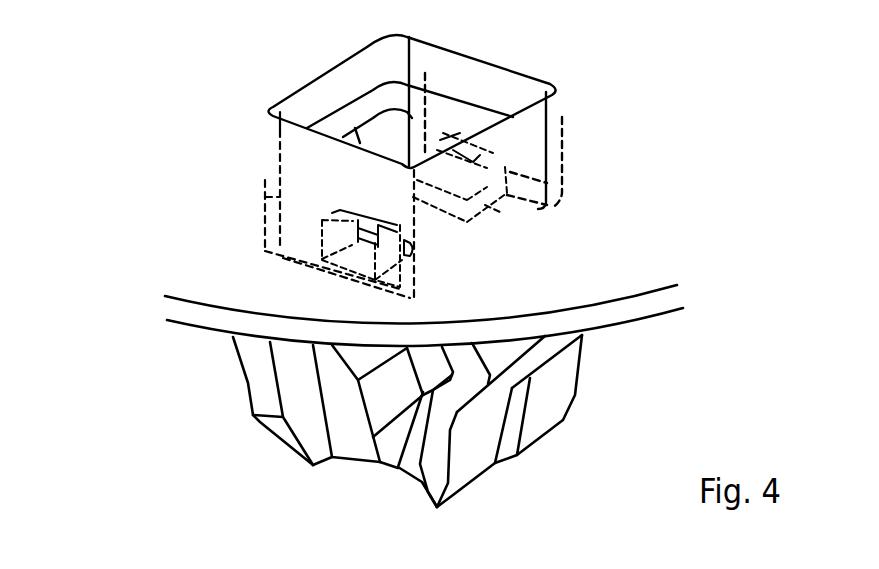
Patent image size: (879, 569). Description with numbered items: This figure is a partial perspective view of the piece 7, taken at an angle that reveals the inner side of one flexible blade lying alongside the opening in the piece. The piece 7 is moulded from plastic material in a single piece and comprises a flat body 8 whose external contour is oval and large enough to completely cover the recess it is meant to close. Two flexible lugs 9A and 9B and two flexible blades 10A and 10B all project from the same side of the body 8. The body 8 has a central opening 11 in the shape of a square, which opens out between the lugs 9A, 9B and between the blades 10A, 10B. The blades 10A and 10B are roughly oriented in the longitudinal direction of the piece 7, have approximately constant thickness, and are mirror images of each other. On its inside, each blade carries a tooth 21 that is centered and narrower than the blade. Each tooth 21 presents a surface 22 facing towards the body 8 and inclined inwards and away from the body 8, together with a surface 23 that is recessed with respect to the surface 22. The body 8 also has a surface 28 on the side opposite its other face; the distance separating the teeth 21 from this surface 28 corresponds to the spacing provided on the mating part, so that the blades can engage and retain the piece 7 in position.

The piece 7 is at (190, 62).
The body 8 is at (207, 285).
The flexible lug 9A is at (263, 373).
The flexible lug 9B is at (442, 445).
The flexible blade 10A is at (412, 285).
The flexible blade 10B is at (557, 159).
The central opening 11 is at (365, 70).
The tooth 21 is at (363, 258).
The surface 22 is at (463, 194).
The surface 23 is at (488, 213).
The surface 28 is at (645, 282).